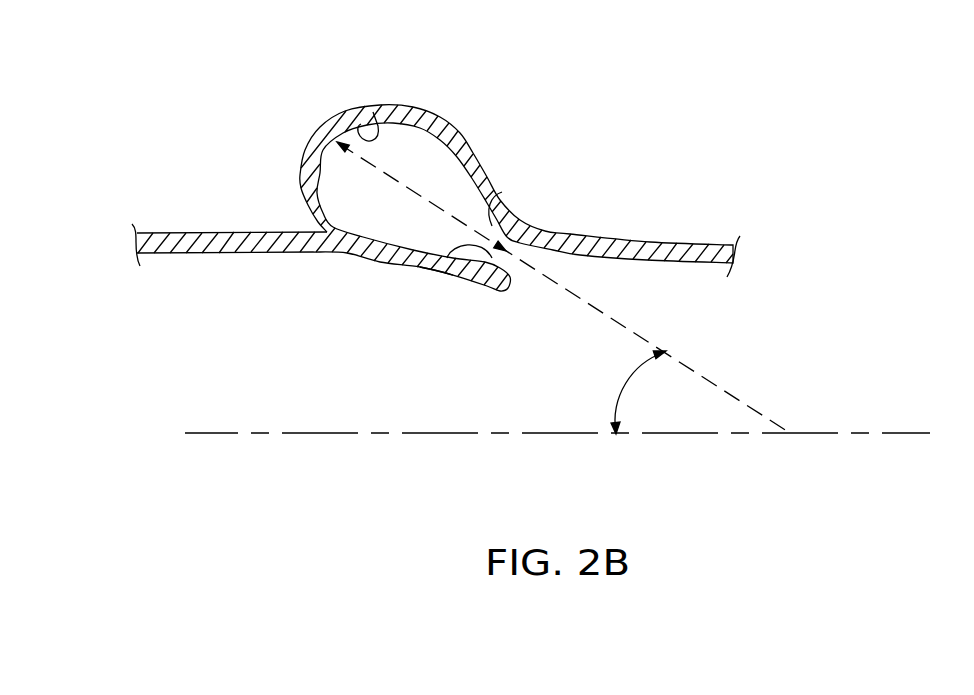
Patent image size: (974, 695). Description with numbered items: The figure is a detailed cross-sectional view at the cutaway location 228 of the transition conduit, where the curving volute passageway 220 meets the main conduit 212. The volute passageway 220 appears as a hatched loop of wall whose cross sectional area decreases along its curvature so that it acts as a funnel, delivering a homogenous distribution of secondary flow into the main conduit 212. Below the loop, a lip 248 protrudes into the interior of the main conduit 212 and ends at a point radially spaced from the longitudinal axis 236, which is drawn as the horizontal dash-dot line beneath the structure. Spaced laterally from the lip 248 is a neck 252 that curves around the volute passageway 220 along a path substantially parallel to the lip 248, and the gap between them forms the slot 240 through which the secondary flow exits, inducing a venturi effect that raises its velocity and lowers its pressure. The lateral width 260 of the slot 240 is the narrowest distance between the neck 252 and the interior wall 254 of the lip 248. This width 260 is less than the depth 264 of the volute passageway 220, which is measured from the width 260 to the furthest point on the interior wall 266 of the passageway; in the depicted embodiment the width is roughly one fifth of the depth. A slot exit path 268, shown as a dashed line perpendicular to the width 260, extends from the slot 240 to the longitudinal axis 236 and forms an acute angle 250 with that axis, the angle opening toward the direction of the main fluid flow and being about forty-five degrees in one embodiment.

The main conduit 212 is at (189, 232).
The volute passageway 220 is at (449, 114).
The cutaway location 228 is at (333, 130).
The longitudinal axis 236 is at (222, 432).
The slot 240 is at (508, 252).
The lip 248 is at (473, 281).
The acute angle 250 is at (626, 383).
The neck 252 is at (503, 190).
The interior wall 254 is at (447, 258).
The width 260 is at (570, 231).
The depth 264 is at (438, 205).
The interior wall 266 is at (373, 112).
The slot exit path 268 is at (713, 381).